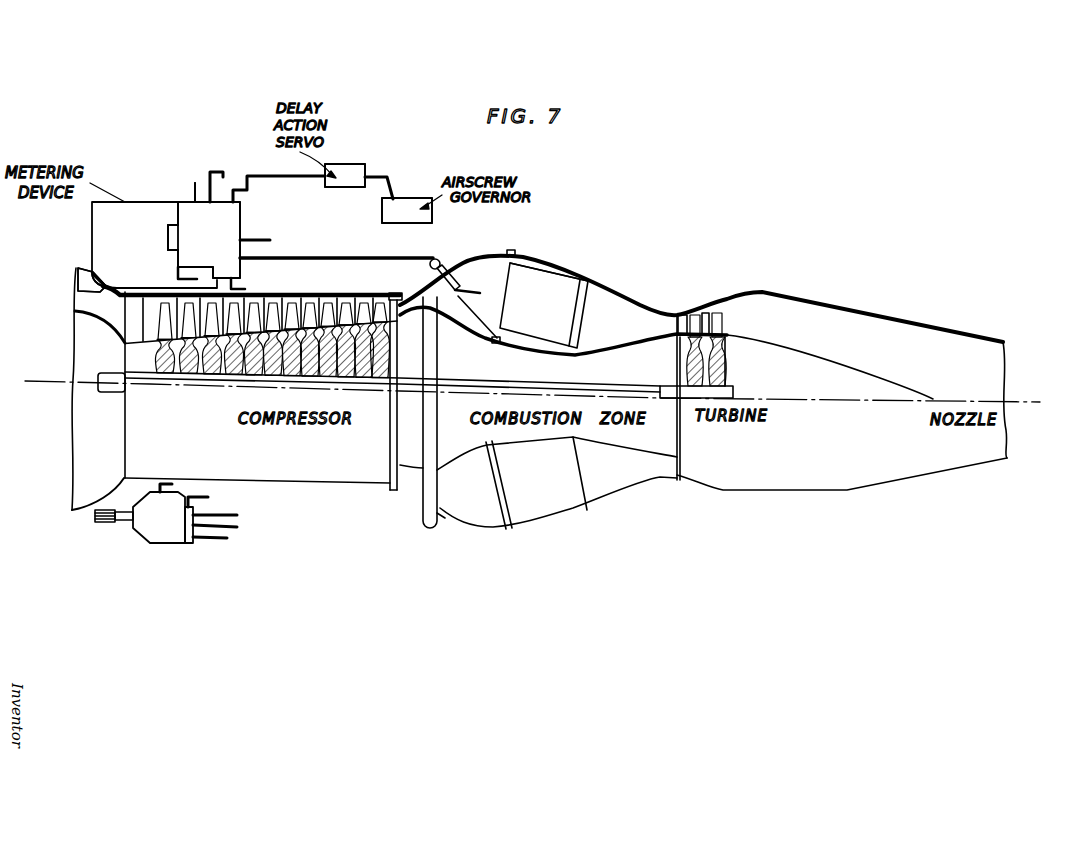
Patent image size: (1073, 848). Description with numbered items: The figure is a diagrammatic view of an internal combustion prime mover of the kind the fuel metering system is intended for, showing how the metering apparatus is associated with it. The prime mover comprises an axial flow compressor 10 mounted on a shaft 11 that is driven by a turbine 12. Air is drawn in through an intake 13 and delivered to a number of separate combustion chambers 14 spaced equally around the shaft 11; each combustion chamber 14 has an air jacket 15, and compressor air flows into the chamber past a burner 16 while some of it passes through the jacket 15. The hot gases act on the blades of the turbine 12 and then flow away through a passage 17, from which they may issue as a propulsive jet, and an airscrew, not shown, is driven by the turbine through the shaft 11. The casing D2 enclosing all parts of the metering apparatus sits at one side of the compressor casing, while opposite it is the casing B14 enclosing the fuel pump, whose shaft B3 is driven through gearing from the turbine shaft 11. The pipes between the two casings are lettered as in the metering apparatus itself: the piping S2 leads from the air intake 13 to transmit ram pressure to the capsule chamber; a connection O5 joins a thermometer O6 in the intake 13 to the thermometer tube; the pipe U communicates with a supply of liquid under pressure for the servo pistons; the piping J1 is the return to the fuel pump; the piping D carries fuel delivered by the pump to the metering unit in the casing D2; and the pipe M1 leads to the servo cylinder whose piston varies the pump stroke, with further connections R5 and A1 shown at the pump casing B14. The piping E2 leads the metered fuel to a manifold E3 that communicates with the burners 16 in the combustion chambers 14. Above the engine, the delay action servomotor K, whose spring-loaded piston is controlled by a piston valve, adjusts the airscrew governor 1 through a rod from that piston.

The piping S2 is at (177, 229).
The connection O5 is at (112, 287).
The thermometer O6 is at (78, 270).
The intake 13 is at (100, 313).
The shaft 11 is at (97, 387).
The axial flow compressor 10 is at (233, 362).
The casing D2 is at (188, 212).
The pipe U is at (198, 183).
The pipe R5 is at (223, 171).
The piping D is at (257, 238).
The pipe M1 is at (187, 277).
The piping J1 is at (246, 289).
The servomotor cylinder K is at (338, 178).
The airscrew governor 1 is at (403, 208).
The piping E2 is at (332, 257).
The manifold E3 is at (440, 261).
The burner 16 is at (497, 335).
The air jacket 15 is at (523, 260).
The combustion chamber 14 is at (555, 292).
The passage 17 is at (927, 353).
The turbine 12 is at (727, 367).
The pipe A1 is at (205, 496).
The fuel pump shaft B3 is at (105, 523).
The casing B14 is at (160, 525).